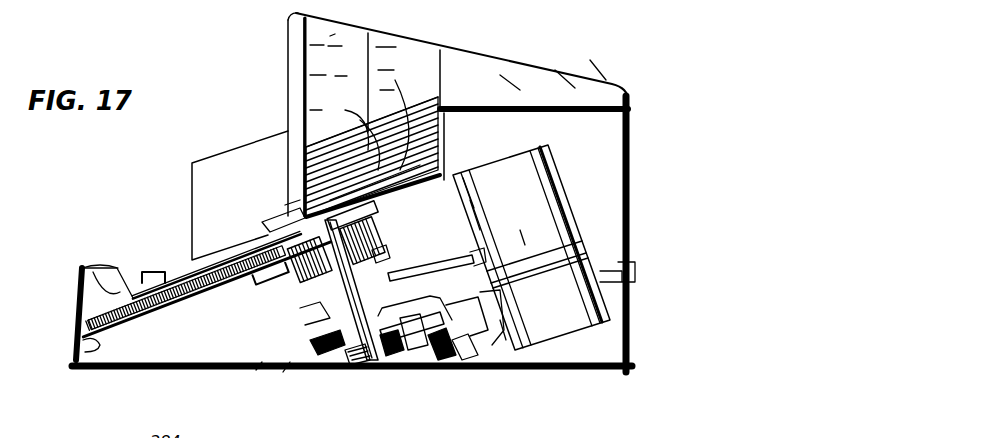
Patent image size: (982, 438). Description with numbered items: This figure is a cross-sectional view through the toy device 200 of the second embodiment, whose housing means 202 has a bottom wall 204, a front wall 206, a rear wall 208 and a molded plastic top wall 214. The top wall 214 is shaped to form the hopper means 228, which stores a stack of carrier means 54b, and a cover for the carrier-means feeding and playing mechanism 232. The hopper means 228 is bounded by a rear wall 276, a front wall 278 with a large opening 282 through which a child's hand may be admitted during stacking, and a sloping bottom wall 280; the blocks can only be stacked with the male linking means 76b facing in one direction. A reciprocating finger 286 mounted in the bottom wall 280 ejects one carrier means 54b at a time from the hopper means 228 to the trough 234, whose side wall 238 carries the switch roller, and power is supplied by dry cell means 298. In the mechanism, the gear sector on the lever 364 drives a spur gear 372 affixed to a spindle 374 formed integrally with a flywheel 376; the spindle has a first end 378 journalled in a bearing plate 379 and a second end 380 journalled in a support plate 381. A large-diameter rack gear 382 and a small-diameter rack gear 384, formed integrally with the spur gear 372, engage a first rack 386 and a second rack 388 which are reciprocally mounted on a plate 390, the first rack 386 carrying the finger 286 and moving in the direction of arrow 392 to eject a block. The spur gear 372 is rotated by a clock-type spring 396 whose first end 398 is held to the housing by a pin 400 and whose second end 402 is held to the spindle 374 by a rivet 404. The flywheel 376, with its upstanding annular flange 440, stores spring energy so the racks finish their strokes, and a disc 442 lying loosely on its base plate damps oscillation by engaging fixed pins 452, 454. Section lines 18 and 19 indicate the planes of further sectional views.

The toy device 200 is at (652, 200).
The housing means 202 is at (588, 70).
The bottom wall 204 is at (430, 366).
The front wall 206 is at (84, 300).
The rear wall 208 is at (632, 307).
The top wall 214 is at (590, 103).
The hopper means 228 is at (340, 35).
The carrier-means feeding and playing mechanism 232 is at (212, 364).
The trough 234 is at (148, 272).
The side wall 238 is at (112, 268).
The rear wall 276 is at (438, 78).
The front wall 278 is at (292, 38).
The sloping bottom wall 280 is at (288, 208).
The opening 282 is at (292, 106).
The reciprocating finger 286 is at (292, 190).
The dry cell means 298 is at (552, 158).
The lever 364 is at (478, 250).
The spur gear 372 is at (322, 290).
The spindle 374 is at (392, 250).
The flywheel 376 is at (412, 302).
The first end 378 is at (383, 227).
The bearing plate 379 is at (470, 194).
The second end 380 is at (338, 368).
The support plate 381 is at (447, 385).
The large-diameter rack gear 382 is at (266, 228).
The small-diameter rack gear 384 is at (374, 256).
The first rack 386 is at (244, 249).
The second rack 388 is at (262, 308).
The plate 390 is at (78, 350).
The arrow 392 is at (146, 326).
The clock-type spring 396 is at (308, 370).
The first end 398 is at (496, 312).
The pin 400 is at (468, 372).
The second end 402 is at (360, 372).
The rivet 404 is at (396, 372).
The annular flange 440 is at (244, 336).
The disc 442 is at (283, 372).
The fixed pin 452 is at (472, 270).
The fixed pin 454 is at (258, 378).
The carrier means 54b is at (392, 88).
The male linking means 76b is at (364, 125).
The section line 18 is at (280, 335).
The section line 19 is at (150, 270).